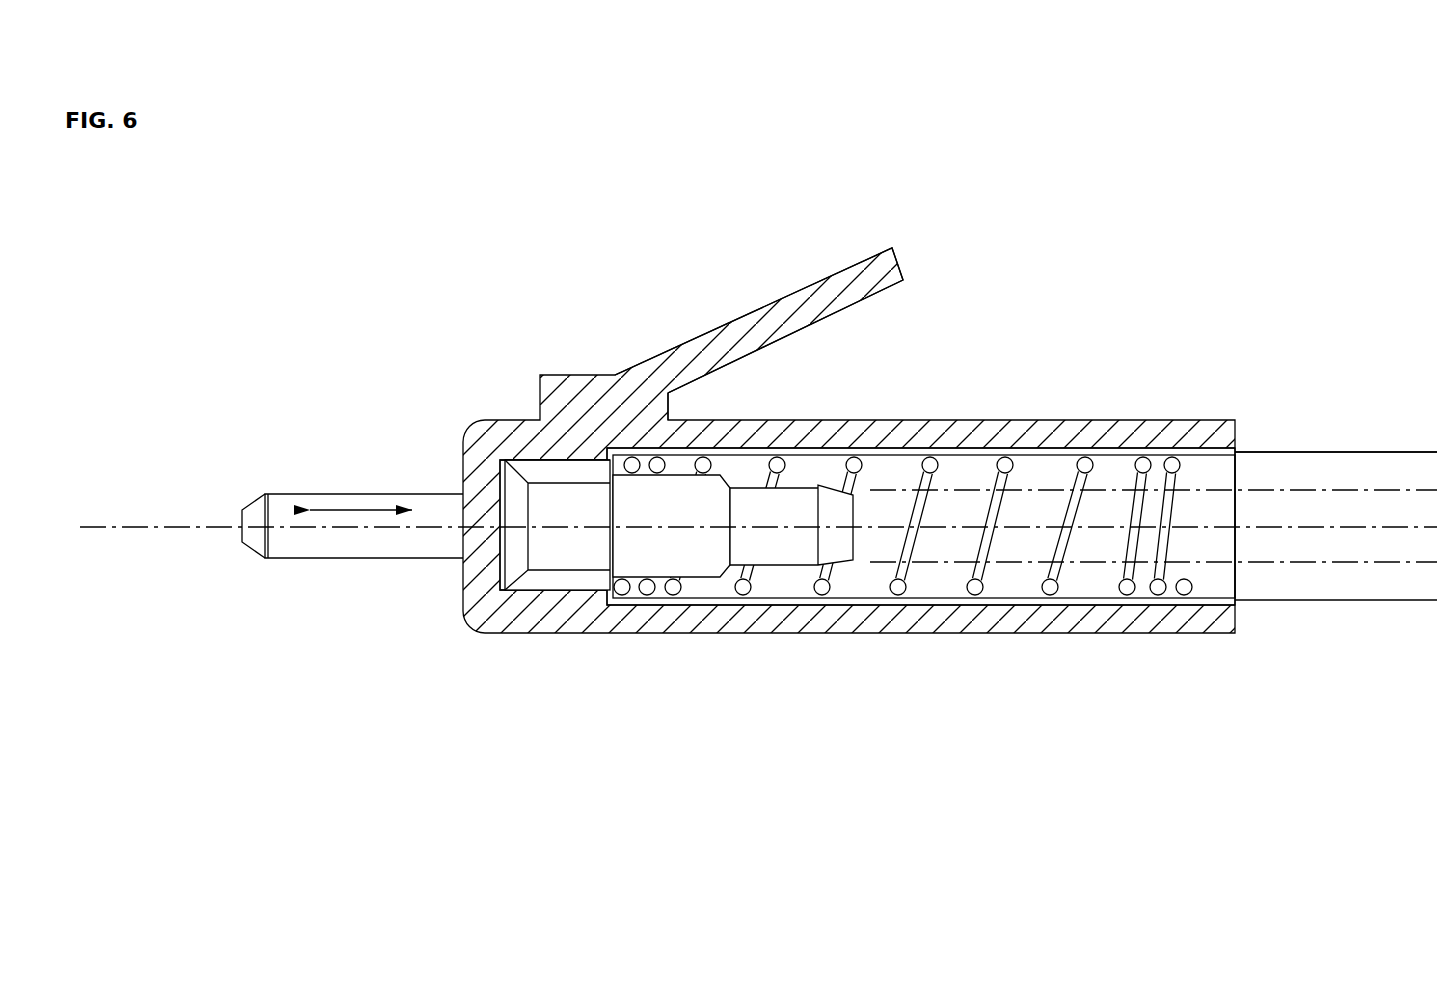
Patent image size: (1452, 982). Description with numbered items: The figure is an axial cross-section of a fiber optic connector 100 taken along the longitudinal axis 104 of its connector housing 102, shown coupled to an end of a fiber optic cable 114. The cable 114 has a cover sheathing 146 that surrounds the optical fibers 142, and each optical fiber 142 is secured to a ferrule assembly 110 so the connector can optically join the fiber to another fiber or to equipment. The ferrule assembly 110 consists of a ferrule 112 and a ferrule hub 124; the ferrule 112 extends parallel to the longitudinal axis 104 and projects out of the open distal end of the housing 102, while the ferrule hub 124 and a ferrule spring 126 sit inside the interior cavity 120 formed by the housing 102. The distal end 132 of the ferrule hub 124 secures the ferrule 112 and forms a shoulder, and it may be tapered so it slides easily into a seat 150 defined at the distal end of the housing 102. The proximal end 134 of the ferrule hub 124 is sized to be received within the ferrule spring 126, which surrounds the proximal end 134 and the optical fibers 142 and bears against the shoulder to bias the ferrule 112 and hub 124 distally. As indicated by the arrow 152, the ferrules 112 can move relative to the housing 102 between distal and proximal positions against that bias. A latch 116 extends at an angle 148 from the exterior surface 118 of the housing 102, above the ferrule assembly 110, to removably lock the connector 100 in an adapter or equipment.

The fiber optic connector 100 is at (1165, 192).
The connector housing 102 is at (1135, 627).
The longitudinal axis 104 is at (283, 525).
The ferrule assembly 110 is at (703, 580).
The ferrule 112 is at (365, 558).
The fiber optic cable 114 is at (1363, 603).
The latch 116 is at (818, 280).
The exterior surface 118 is at (983, 417).
The interior cavity 120 is at (1038, 482).
The ferrule hub 124 is at (562, 545).
The ferrule spring 126 is at (975, 590).
The distal end of ferrule hub 132 is at (497, 592).
The proximal end of ferrule hub 134 is at (785, 565).
The optical fiber 142 is at (1372, 490).
The cover sheathing 146 is at (1318, 450).
The angle 148 is at (857, 322).
The seat 150 is at (528, 460).
The arrow 152 is at (358, 505).